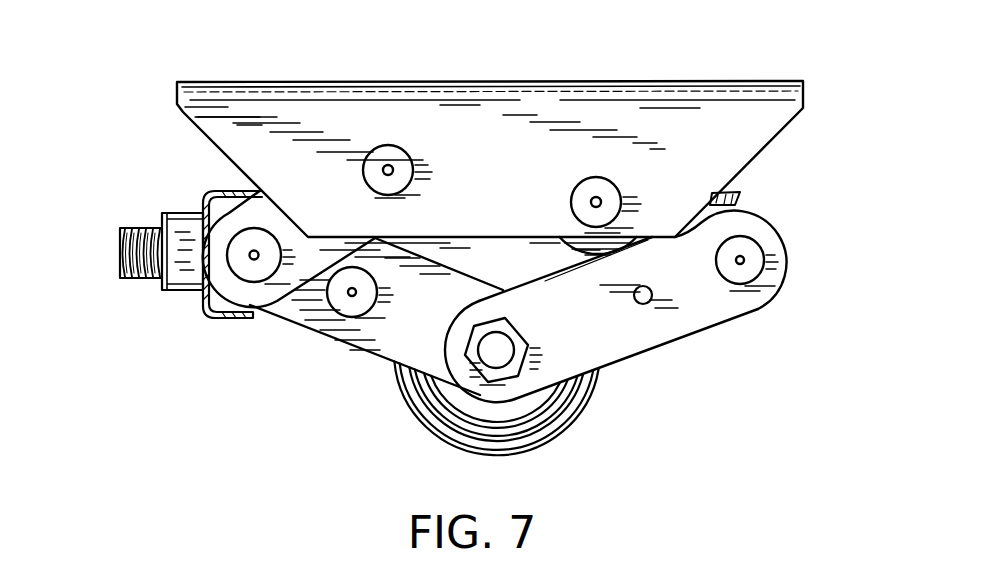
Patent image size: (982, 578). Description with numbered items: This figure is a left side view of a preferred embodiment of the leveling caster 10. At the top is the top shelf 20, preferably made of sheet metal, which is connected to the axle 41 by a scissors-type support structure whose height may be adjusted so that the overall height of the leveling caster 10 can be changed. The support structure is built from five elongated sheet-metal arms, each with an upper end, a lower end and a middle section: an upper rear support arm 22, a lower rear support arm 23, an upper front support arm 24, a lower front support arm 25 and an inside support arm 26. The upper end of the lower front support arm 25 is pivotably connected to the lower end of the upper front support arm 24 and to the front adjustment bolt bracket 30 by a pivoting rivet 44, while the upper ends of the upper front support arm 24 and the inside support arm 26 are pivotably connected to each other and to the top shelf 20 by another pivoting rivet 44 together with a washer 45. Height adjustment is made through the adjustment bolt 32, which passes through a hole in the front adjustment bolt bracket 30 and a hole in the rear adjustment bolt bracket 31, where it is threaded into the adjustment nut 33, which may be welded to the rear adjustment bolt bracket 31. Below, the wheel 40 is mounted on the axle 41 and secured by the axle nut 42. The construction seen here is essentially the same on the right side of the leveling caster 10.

The leveling caster 10 is at (155, 50).
The top shelf 20 is at (497, 150).
The upper rear support arm 22 is at (250, 212).
The lower rear support arm 23 is at (380, 328).
The upper front support arm 24 is at (727, 194).
The lower front support arm 25 is at (760, 232).
The inside support arm 26 is at (477, 260).
The front adjustment bolt bracket 30 is at (742, 319).
The rear adjustment bolt bracket 31 is at (233, 318).
The adjustment bolt 32 is at (121, 254).
The adjustment nut 33 is at (164, 291).
The wheel 40 is at (571, 390).
The axle 41 is at (492, 352).
The axle nut 42 is at (512, 362).
The pivoting rivet 44 is at (387, 158).
The washer 45 is at (603, 246).